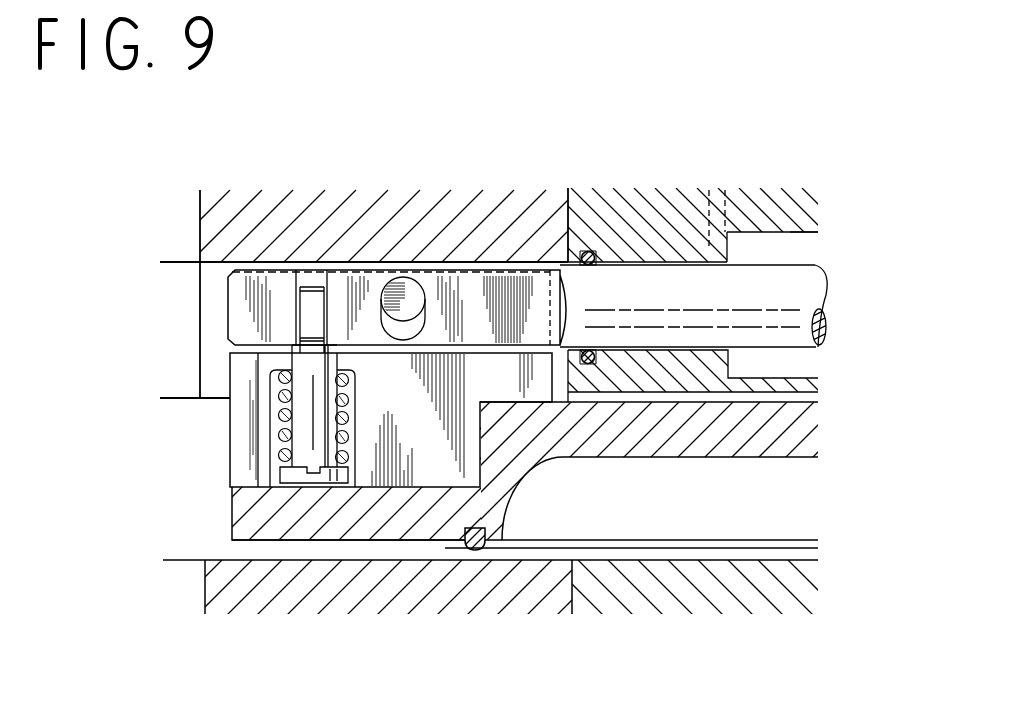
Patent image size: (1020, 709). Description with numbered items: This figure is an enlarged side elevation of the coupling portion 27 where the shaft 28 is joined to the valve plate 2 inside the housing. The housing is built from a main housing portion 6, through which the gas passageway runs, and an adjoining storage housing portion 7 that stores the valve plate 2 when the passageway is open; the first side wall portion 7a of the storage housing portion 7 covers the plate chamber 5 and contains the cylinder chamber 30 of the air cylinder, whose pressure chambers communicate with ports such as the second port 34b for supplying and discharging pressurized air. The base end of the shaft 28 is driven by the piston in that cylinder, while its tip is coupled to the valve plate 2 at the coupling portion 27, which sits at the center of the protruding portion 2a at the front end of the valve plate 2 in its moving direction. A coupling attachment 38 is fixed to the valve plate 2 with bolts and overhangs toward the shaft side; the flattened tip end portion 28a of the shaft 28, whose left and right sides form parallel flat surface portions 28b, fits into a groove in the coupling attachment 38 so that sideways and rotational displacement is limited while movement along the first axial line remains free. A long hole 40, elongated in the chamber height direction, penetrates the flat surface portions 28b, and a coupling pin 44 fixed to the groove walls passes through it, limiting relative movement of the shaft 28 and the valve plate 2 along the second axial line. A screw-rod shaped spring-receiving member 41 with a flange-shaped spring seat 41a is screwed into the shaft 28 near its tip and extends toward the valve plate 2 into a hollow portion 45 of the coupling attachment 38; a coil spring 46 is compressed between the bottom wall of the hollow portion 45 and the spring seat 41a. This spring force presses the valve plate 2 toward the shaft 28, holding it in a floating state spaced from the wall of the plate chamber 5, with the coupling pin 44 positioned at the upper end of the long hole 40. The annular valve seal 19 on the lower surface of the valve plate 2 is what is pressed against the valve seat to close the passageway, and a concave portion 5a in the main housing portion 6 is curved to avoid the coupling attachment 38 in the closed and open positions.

The valve plate 2 is at (772, 426).
The protruding portion 2a is at (425, 543).
The plate chamber 5 is at (780, 540).
The concave portion 5a is at (217, 258).
The main housing portion 6 is at (250, 212).
The storage housing portion 7 is at (645, 212).
The first side wall portion 7a is at (790, 192).
The annular valve seal 19 is at (483, 550).
The coupling portion 27 is at (326, 166).
The shaft 28 is at (793, 287).
The tip end portion 28a is at (518, 260).
The flat surface portions 28b is at (473, 292).
The cylinder chamber 30 is at (795, 246).
The second port 34b is at (722, 215).
The coupling attachment 38 is at (417, 467).
The long hole 40 is at (400, 337).
The spring-receiving member 41 is at (310, 430).
The spring seat 41a is at (285, 474).
The coupling pin 44 is at (404, 300).
The hollow portion 45 is at (278, 383).
The coil spring 46 is at (287, 417).